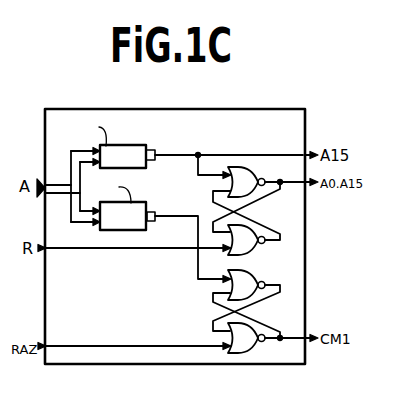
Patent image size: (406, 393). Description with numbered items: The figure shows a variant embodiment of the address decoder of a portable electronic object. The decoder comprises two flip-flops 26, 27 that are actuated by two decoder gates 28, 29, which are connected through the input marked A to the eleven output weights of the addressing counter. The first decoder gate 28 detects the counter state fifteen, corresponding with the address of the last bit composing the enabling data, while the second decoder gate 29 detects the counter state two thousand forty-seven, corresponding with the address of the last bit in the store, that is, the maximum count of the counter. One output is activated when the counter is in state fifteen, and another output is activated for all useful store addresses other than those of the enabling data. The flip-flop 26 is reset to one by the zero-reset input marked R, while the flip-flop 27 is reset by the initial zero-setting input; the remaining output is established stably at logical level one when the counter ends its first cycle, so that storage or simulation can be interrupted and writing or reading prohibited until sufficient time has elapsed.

The flip-flop 26 is at (276, 212).
The flip-flop 27 is at (276, 309).
The decoder gate 28 is at (139, 146).
The decoder gate 29 is at (139, 204).